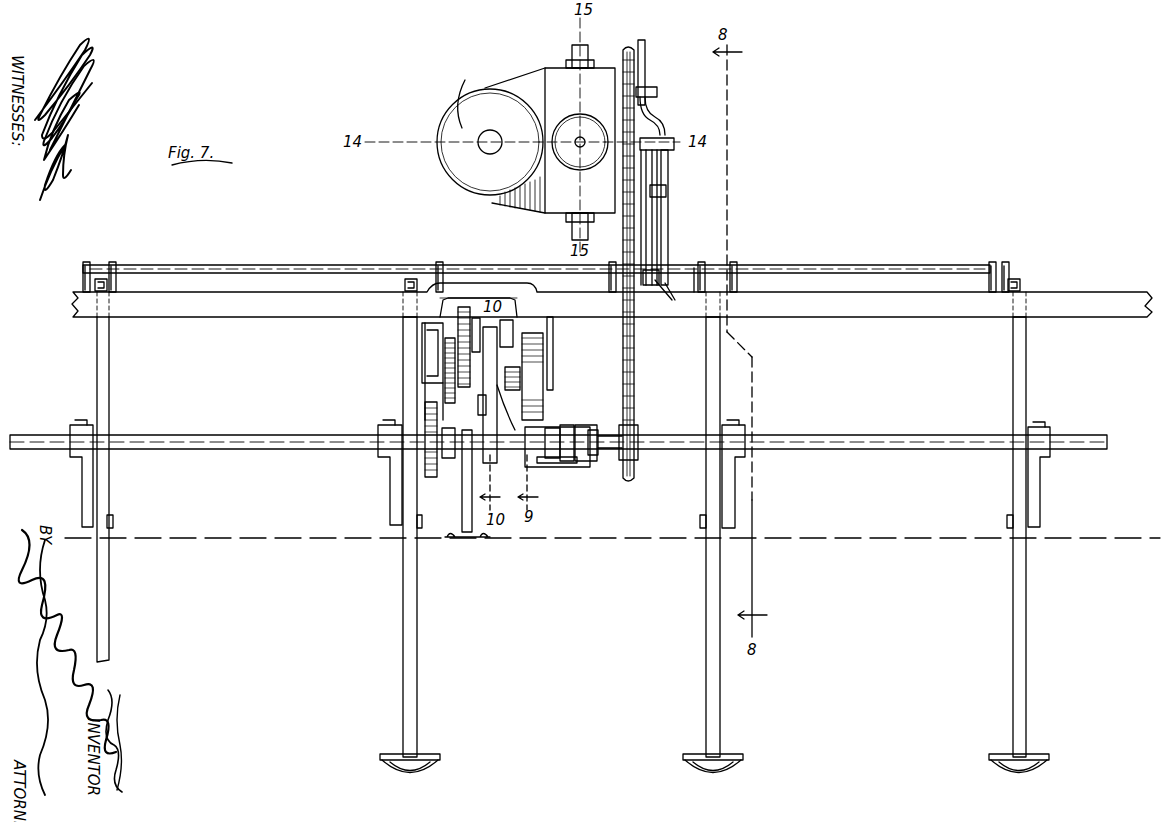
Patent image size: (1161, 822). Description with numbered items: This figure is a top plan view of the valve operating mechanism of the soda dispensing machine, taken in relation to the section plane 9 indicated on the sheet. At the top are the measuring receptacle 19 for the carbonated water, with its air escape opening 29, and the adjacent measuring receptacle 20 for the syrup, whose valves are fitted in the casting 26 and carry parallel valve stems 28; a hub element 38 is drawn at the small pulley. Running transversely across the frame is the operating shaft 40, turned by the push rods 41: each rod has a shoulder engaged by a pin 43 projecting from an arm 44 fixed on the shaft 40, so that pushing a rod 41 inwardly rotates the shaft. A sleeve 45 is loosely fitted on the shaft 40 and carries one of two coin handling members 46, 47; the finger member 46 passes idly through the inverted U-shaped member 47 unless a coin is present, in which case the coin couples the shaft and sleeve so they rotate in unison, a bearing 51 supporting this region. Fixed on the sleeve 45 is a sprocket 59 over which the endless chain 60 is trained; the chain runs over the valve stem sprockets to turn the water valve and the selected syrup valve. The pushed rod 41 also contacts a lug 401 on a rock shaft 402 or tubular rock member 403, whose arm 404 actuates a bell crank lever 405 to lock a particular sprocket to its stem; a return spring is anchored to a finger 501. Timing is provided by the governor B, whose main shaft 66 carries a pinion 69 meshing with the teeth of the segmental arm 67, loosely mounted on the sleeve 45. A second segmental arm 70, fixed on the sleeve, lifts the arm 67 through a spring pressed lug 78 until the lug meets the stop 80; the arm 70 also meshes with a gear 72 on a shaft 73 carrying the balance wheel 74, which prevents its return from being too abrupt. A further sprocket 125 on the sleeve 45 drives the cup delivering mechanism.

The section line 9 is at (547, 374).
The measuring receptacle for carbonated water 19 is at (468, 88).
The measuring receptacle for syrup 20 is at (589, 128).
The casting 26 is at (533, 73).
The valve stem 28 is at (658, 92).
The opening 29 is at (491, 138).
The pulley hub 38 is at (578, 152).
The operating shaft 40 is at (843, 437).
The lug 401 is at (400, 283).
The rock shaft 402 is at (294, 265).
The tubular rock member 403 is at (694, 268).
The arm 404 is at (679, 298).
The bell crank lever 405 is at (655, 238).
The push rod 41 is at (88, 476).
The pin 43 is at (113, 520).
The arm 44 is at (391, 470).
The sleeve 45 is at (660, 435).
The coin handling member 46 is at (596, 395).
The coin handling member 47 is at (586, 428).
The finger 501 is at (648, 58).
The bearing 51 is at (567, 395).
The sprocket 59 is at (638, 458).
The endless chain 60 is at (637, 356).
The main shaft of governor 66 is at (449, 312).
The segmental arm 67 is at (445, 366).
The pinion 69 is at (468, 317).
The segmental arm 70 is at (565, 430).
The gear 72 is at (515, 367).
The shaft 73 is at (556, 372).
The balance wheel 74 is at (533, 376).
The pin or lug 78 is at (528, 462).
The stop 80 is at (463, 460).
The sprocket 125 is at (396, 527).
The governor B is at (420, 396).